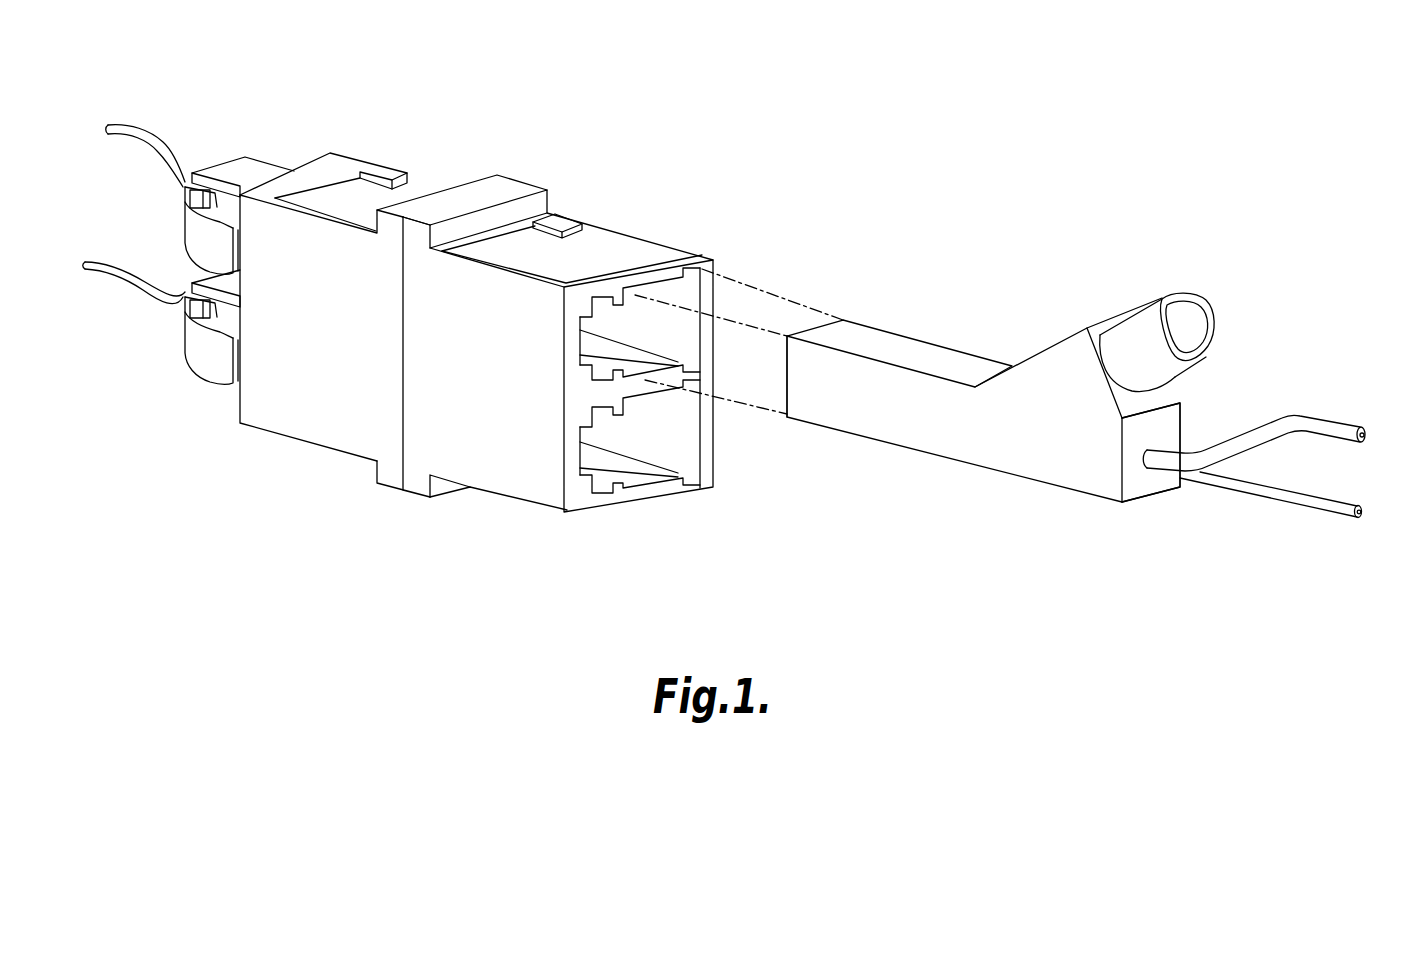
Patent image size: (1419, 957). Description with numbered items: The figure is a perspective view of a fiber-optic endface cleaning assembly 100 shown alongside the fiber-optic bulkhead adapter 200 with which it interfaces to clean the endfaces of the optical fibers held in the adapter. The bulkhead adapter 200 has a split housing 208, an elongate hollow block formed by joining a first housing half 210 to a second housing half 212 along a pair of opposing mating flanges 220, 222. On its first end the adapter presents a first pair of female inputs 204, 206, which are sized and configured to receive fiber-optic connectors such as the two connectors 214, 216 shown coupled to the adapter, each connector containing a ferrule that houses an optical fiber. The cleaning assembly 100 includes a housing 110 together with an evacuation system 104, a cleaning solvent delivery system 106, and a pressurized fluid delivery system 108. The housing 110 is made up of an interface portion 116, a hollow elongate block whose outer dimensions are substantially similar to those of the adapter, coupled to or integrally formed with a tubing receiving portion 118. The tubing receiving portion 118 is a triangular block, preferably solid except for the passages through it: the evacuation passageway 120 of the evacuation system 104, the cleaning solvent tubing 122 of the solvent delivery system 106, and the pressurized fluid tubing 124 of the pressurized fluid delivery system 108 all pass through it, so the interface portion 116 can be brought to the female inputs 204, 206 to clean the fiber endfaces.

The fiber-optic endface cleaning assembly 100 is at (999, 211).
The evacuation system 104 is at (1157, 288).
The cleaning solvent delivery system 106 is at (1296, 408).
The pressurized fluid delivery system 108 is at (1277, 502).
The housing 110 is at (940, 423).
The interface portion 116 is at (822, 397).
The tubing receiving portion 118 is at (1078, 458).
The evacuation passageway 120 is at (1214, 307).
The cleaning solvent tubing 122 is at (1365, 440).
The pressurized fluid tubing 124 is at (1364, 513).
The fiber-optic bulkhead adapter 200 is at (434, 106).
The female input 204 is at (688, 291).
The female input 206 is at (678, 440).
The split housing 208 is at (403, 488).
The first housing half 210 is at (318, 413).
The second housing half 212 is at (527, 475).
The fiber-optic connector 214 is at (237, 166).
The fiber-optic connector 216 is at (191, 357).
The mating flange 220 is at (496, 178).
The mating flange 222 is at (523, 193).